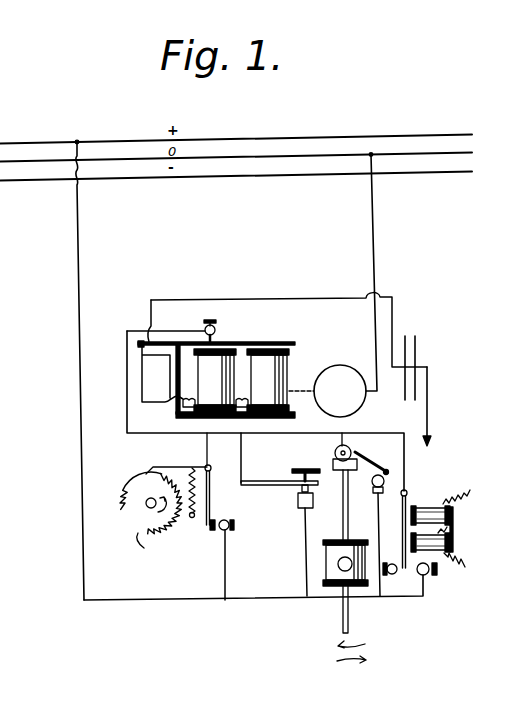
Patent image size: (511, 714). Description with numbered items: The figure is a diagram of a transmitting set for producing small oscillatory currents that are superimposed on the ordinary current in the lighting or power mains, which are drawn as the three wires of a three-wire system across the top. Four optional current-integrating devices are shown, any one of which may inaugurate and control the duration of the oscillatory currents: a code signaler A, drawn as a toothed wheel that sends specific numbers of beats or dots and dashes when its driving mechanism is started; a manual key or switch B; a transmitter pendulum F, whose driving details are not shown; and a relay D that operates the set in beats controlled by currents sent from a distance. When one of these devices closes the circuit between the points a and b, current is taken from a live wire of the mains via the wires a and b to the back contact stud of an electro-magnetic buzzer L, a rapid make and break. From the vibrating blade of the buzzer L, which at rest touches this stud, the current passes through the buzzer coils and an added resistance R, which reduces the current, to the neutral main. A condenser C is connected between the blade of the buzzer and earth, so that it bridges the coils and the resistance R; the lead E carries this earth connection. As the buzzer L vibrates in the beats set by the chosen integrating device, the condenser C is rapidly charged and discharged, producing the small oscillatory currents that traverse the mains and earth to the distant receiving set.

The code signaler A is at (177, 516).
The manual key B is at (280, 514).
The condenser C is at (406, 381).
The relay D is at (426, 550).
The lead to external circuit E is at (431, 421).
The transmitter pendulum F is at (342, 515).
The electro-magnetic buzzer L is at (215, 376).
The added resistance R is at (340, 391).
The wire a is at (249, 600).
The wire b is at (92, 370).